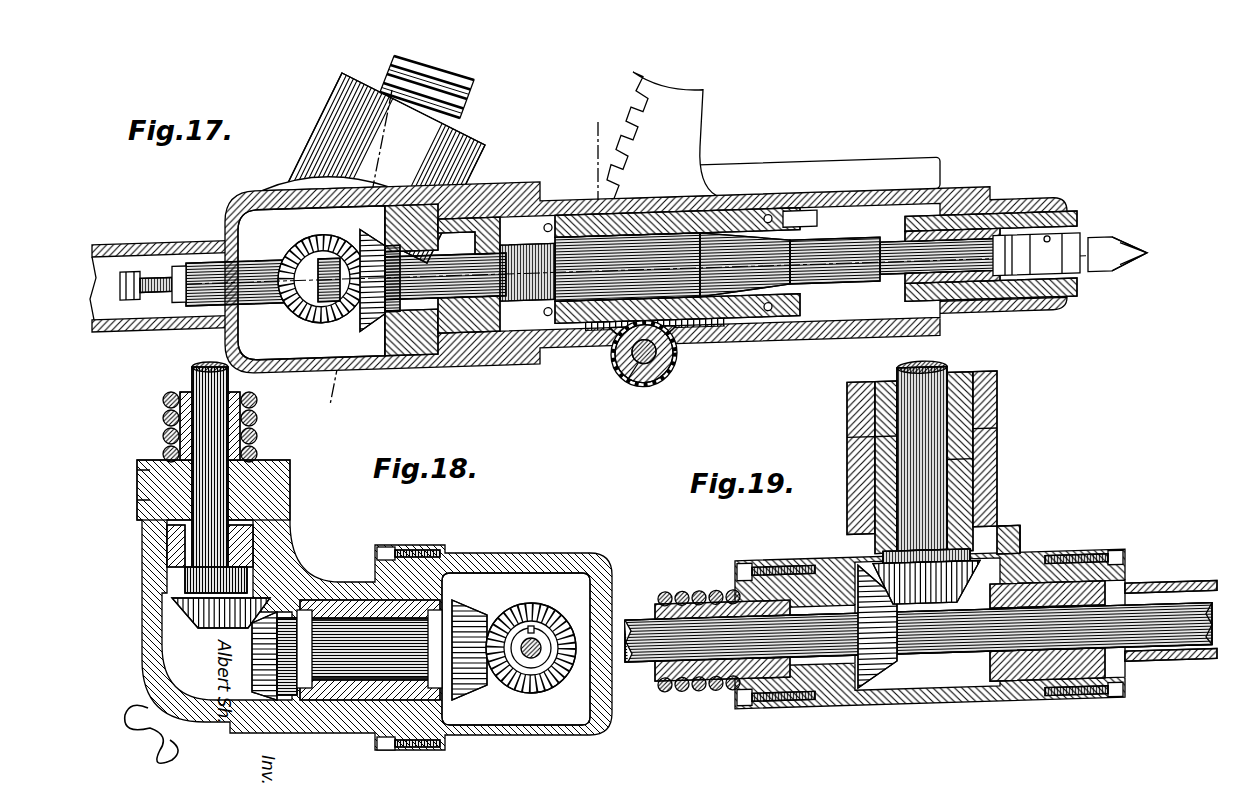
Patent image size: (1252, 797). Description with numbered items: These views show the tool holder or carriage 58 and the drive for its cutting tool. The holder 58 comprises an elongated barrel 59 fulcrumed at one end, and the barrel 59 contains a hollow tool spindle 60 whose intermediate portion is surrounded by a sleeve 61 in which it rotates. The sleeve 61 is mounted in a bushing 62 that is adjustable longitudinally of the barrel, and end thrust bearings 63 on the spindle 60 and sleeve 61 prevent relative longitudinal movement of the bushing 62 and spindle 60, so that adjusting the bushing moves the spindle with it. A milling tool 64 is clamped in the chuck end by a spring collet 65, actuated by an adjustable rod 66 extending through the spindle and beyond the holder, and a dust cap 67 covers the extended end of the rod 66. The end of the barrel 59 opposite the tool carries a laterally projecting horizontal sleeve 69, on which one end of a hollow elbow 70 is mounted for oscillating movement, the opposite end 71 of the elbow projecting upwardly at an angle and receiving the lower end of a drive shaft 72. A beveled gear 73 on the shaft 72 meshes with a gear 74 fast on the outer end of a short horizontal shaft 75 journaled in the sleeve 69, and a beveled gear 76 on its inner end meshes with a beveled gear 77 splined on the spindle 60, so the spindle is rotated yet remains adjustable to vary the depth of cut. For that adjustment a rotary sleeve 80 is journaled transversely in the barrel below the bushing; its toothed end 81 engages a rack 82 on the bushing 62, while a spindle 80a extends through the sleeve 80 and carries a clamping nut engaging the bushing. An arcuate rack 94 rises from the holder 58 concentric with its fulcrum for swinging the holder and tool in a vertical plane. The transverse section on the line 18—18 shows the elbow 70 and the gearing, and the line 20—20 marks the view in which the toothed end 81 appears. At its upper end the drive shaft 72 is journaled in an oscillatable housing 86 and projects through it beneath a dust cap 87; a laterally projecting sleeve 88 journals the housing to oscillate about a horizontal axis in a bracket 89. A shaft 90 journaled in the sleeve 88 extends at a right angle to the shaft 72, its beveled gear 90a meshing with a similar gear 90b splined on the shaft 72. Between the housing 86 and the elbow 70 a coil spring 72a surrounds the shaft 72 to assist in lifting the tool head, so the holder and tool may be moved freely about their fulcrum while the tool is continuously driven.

In FIG. 17, the section line 18— 18 is at (438, 68).
In FIG. 17, the section line 20- 20 is at (650, 432).
In FIG. 17, the tool holder 58 is at (470, 364).
In FIG. 17, the barrel 59 is at (397, 364).
In FIG. 18, the barrel 59 is at (516, 667).
In FIG. 17, the tool spindle 60 is at (476, 256).
In FIG. 18, the tool spindle 60 is at (538, 628).
In FIG. 17, the sleeve 61 is at (668, 236).
In FIG. 17, the bushing 62 is at (728, 199).
In FIG. 17, the end thrust bearings 63 is at (578, 348).
In FIG. 17, the milling tool 64 is at (1133, 266).
In FIG. 17, the spring collet 65 is at (1086, 297).
In FIG. 17, the adjustable rod 66 is at (153, 293).
In FIG. 18, the adjustable rod 66 is at (512, 627).
In FIG. 17, the dust cap 67 is at (148, 238).
In FIG. 18, the horizontal sleeve 69 is at (344, 703).
In FIG. 17, the hollow elbow 70 is at (330, 129).
In FIG. 18, the hollow elbow 70 is at (298, 568).
In FIG. 18, the projecting end of the elbow 71 is at (292, 478).
In FIG. 18, the drive shaft 72 is at (190, 384).
In FIG. 19, the drive shaft 72 is at (648, 612).
In FIG. 17, the coil spring 72a is at (476, 93).
In FIG. 18, the coil spring 72a is at (170, 453).
In FIG. 19, the coil spring 72a is at (668, 684).
In FIG. 18, the beveled gear 73 is at (216, 630).
In FIG. 18, the gear 74 is at (254, 672).
In FIG. 18, the short horizontal shaft 75 is at (369, 649).
In FIG. 17, the beveled gear 76 is at (320, 226).
In FIG. 18, the beveled gear 76 is at (482, 700).
In FIG. 17, the beveled gear 77 is at (378, 324).
In FIG. 18, the beveled gear 77 is at (546, 693).
In FIG. 17, the rotary sleeve 80 is at (686, 384).
In FIG. 17, the spindle 80a is at (630, 394).
In FIG. 17, the toothed end 81 is at (678, 395).
In FIG. 17, the rack 82 is at (705, 348).
In FIG. 19, the oscillatable housing 86 is at (940, 703).
In FIG. 19, the dust cap 87 is at (1190, 668).
In FIG. 19, the sleeve 88 is at (997, 465).
In FIG. 19, the bracket 89 is at (847, 505).
In FIG. 19, the shaft 90 is at (930, 362).
In FIG. 19, the beveled gear 90a is at (1020, 550).
In FIG. 19, the beveled gear 90b is at (900, 650).
In FIG. 17, the arcuate rack 94 is at (690, 129).